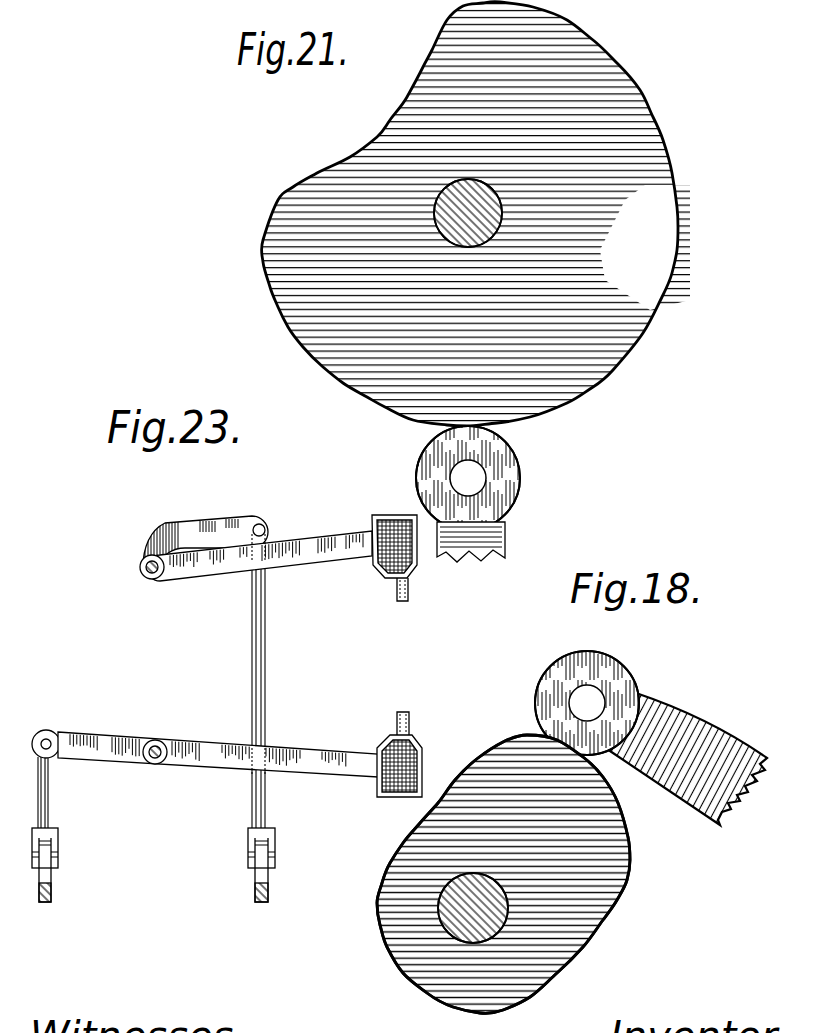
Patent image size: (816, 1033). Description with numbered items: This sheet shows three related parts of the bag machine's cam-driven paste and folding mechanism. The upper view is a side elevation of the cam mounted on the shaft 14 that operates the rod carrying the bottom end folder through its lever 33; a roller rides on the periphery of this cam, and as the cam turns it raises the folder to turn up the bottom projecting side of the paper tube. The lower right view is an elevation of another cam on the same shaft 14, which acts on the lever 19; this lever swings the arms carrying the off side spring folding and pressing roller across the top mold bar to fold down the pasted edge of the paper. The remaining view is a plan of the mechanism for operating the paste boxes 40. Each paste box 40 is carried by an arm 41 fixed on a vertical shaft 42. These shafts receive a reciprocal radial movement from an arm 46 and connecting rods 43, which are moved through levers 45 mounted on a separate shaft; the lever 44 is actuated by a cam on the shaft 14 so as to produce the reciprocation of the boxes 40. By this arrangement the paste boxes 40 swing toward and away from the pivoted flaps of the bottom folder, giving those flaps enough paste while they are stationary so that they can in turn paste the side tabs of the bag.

In FIG. 21, the shaft 14 is at (480, 213).
In FIG. 18, the shaft 14 is at (485, 915).
In FIG. 18, the lever 19 is at (690, 722).
In FIG. 21, the lever 33 is at (505, 532).
In FIG. 23, the paste box 40 is at (408, 507).
In FIG. 23, the arm 41 is at (360, 550).
In FIG. 23, the vertical shaft 42 is at (153, 580).
In FIG. 23, the connecting rod 43 is at (265, 682).
In FIG. 23, the lever 44 is at (55, 888).
In FIG. 23, the lever 45 is at (268, 886).
In FIG. 23, the arm 46 is at (215, 505).